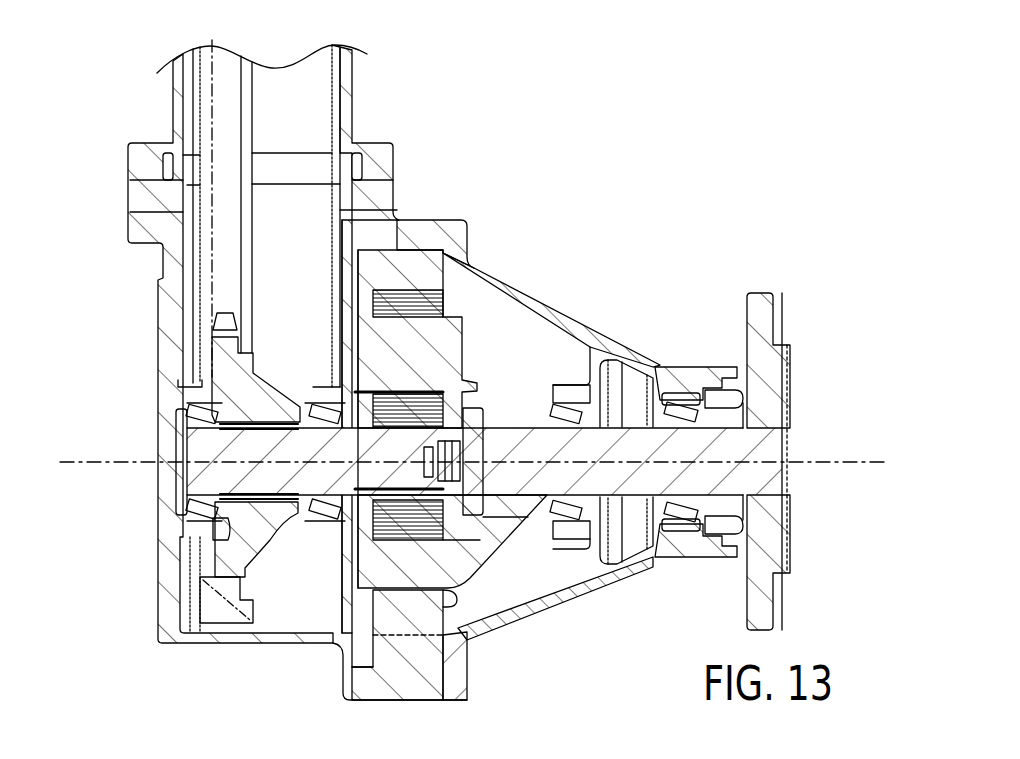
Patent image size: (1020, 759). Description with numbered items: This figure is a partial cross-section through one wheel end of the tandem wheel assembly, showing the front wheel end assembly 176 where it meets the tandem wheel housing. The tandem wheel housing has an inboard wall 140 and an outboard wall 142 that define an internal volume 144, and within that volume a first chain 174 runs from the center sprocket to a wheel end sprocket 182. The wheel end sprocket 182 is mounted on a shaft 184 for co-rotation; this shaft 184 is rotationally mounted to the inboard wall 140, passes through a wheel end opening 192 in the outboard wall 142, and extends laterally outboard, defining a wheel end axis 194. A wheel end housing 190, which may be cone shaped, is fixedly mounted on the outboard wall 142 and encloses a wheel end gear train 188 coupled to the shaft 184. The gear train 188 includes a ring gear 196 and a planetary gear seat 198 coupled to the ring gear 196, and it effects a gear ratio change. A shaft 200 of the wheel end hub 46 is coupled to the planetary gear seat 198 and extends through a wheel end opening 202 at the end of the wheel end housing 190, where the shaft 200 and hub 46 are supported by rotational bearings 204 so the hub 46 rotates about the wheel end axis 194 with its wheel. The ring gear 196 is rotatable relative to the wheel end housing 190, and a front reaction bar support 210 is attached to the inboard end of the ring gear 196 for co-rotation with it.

The wheel end hub 46 is at (757, 310).
The inboard wall 140 is at (167, 528).
The outboard wall 142 is at (340, 277).
The internal volume 144 is at (300, 231).
The first chain 174 is at (200, 607).
The front wheel end assembly 176 is at (643, 273).
The wheel end sprocket 182 is at (253, 533).
The shaft 184 is at (220, 445).
The wheel end gear train 188 is at (480, 569).
The wheel end housing 190 is at (520, 302).
The wheel end opening 192 is at (333, 433).
The wheel end axis 194 is at (113, 462).
The ring gear 196 is at (427, 657).
The planetary gear seat 198 is at (425, 617).
The shaft 200 is at (545, 442).
The wheel end opening 202 is at (730, 383).
The rotational bearings 204 is at (688, 403).
The front reaction bar support 210 is at (362, 655).